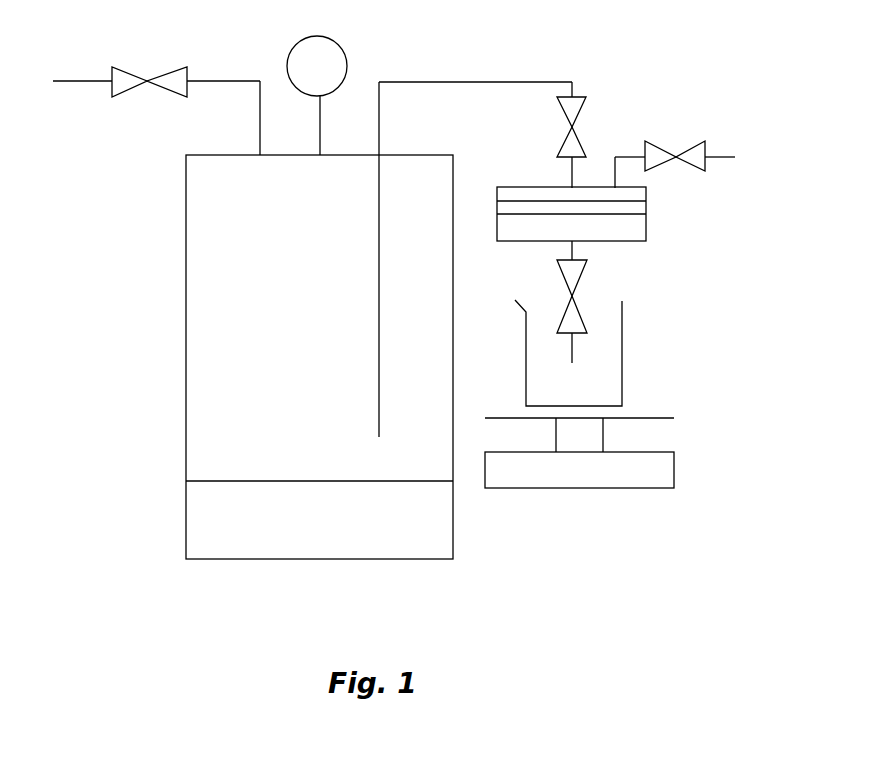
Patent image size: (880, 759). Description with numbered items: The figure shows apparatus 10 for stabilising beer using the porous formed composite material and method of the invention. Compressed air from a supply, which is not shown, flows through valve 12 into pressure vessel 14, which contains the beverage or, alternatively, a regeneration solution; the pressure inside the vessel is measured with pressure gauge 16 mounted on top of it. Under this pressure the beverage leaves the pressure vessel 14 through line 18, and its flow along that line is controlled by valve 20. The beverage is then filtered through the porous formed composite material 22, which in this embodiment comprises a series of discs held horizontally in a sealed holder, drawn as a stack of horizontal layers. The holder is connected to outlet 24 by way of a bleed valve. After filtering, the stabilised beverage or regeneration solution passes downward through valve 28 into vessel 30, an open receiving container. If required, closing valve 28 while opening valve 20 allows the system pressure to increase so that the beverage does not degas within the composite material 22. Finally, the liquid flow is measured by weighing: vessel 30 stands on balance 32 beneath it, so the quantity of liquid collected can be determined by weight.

The apparatus 10 is at (65, 296).
The valve 12 is at (145, 66).
The pressure vessel 14 is at (248, 365).
The pressure gauge 16 is at (347, 50).
The line 18 is at (513, 72).
The valve 20 is at (583, 121).
The porous formed composite material 22 is at (663, 213).
The outlet 24 is at (726, 148).
The valve 28 is at (590, 277).
The vessel 30 is at (630, 361).
The balance 32 is at (676, 473).